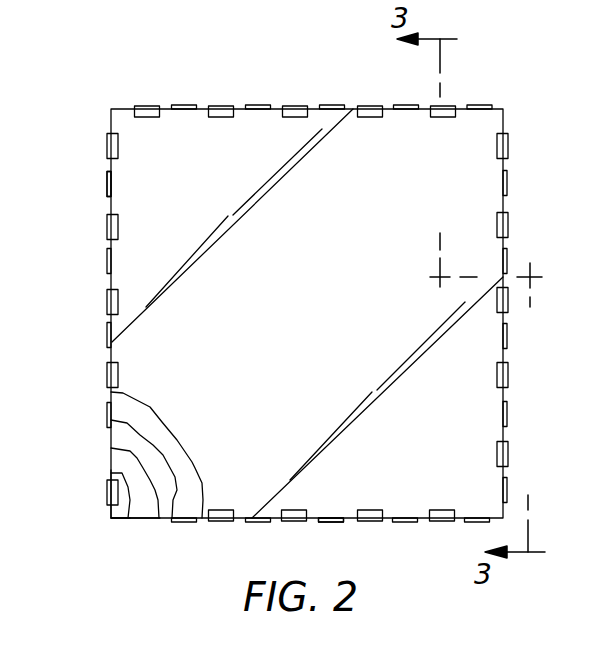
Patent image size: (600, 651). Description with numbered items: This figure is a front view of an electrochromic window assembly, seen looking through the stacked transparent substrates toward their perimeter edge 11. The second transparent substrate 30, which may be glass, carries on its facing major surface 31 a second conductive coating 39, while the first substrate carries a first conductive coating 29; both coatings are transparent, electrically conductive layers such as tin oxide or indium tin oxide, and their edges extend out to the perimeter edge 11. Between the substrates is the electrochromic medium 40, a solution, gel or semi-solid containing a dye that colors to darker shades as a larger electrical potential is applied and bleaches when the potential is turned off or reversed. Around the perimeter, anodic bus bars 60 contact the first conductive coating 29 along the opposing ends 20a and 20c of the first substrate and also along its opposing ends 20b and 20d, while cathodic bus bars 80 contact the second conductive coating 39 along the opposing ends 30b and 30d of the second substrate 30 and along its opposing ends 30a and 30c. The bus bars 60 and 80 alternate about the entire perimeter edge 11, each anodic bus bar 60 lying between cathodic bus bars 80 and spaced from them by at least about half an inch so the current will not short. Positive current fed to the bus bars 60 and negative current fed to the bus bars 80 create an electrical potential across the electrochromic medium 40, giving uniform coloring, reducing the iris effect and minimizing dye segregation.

The perimeter edge 11 is at (505, 121).
The opposing end of first substrate 20a is at (492, 80).
The opposing end of first substrate 20b is at (108, 205).
The opposing end of first substrate 20c is at (350, 522).
The opposing end of first substrate 20d is at (548, 336).
The opposing end of second substrate 30a is at (462, 106).
The opposing end of second substrate 30b is at (107, 510).
The opposing end of second substrate 30c is at (120, 519).
The opposing end of second substrate 30d is at (508, 353).
The second transparent substrate 30 is at (111, 522).
The major surface of second substrate 31 is at (120, 489).
The first conductive coating 29 is at (192, 494).
The second conductive coating 39 is at (145, 499).
The electrochromic medium 40 is at (169, 494).
The anodic bus bars 60 is at (107, 147).
The cathodic bus bars 80 is at (265, 106).